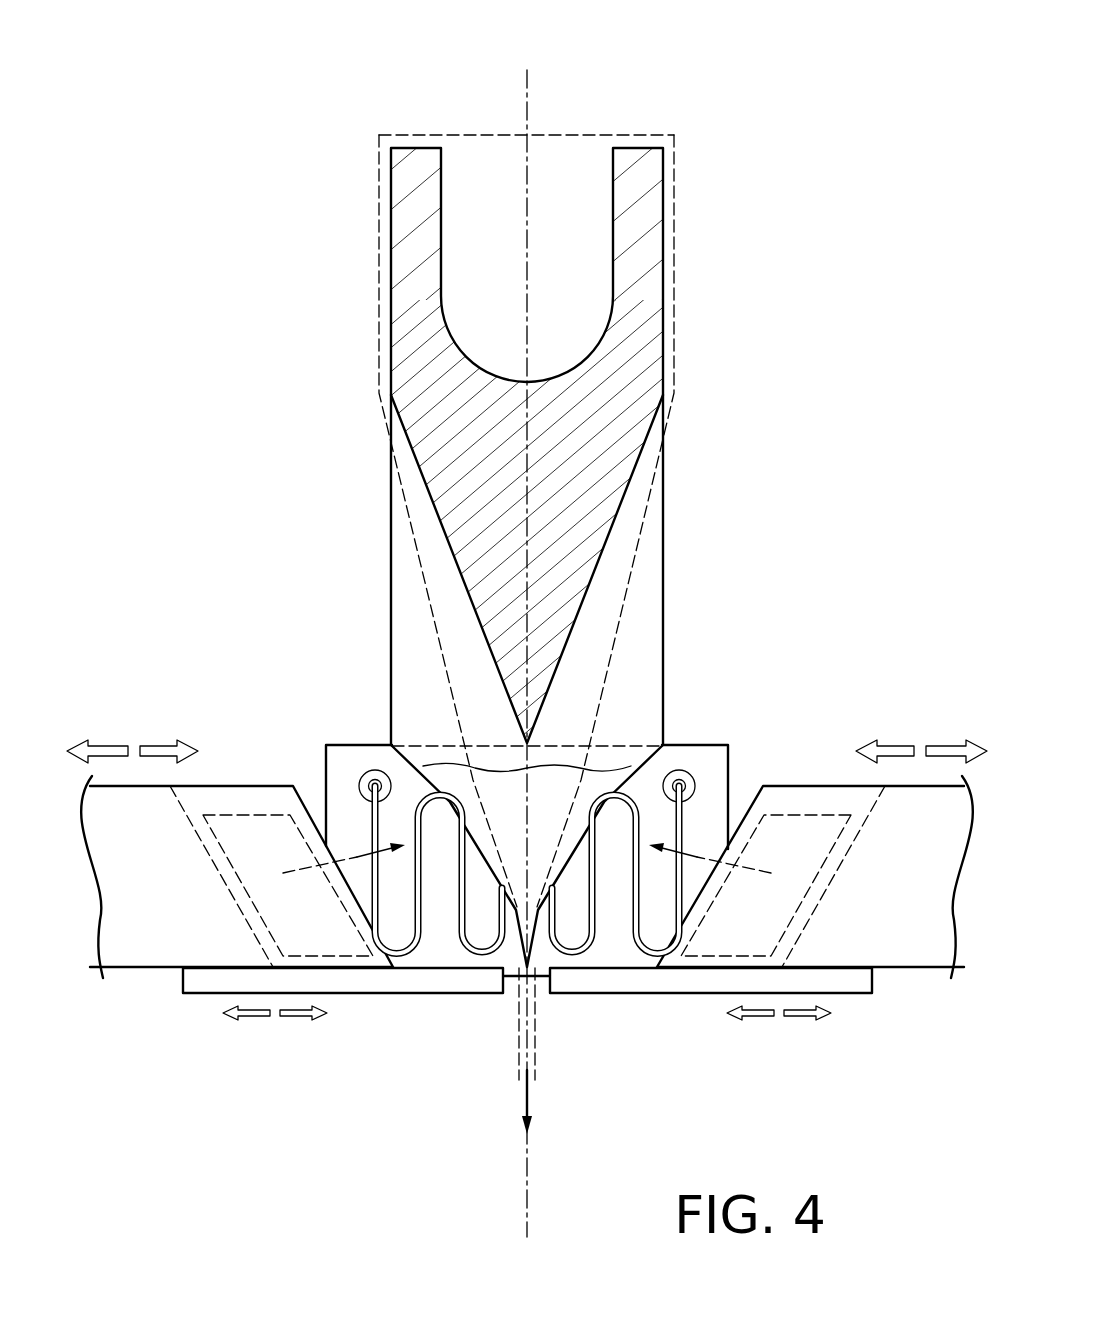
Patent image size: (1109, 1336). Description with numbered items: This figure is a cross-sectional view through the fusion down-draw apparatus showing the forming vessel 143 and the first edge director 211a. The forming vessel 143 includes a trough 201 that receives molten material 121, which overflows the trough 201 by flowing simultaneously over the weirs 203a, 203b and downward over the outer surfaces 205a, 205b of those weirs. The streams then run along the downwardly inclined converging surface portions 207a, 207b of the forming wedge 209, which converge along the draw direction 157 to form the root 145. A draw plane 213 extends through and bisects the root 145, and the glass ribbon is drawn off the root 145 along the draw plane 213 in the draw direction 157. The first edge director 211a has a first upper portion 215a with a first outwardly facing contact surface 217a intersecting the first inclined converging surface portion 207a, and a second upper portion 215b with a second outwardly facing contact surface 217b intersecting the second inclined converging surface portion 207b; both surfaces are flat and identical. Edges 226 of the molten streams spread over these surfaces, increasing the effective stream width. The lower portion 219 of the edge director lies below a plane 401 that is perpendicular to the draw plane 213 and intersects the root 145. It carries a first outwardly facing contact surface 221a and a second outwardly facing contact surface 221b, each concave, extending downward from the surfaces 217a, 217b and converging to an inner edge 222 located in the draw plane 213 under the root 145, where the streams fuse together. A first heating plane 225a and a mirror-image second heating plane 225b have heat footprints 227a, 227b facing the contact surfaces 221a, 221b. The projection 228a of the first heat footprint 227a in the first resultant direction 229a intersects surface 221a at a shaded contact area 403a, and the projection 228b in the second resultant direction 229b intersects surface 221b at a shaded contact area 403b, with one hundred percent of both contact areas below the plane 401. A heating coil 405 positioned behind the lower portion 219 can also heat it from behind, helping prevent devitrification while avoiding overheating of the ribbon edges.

The forming vessel 143 is at (562, 120).
The molten material 121 is at (482, 195).
The trough 201 is at (613, 296).
The weir 203a is at (414, 148).
The weir 203b is at (640, 148).
The outer surface of weir 205a is at (391, 215).
The outer surface of weir 205b is at (663, 215).
The first inclined converging surface portion 207a is at (465, 593).
The second inclined converging surface portion 207b is at (590, 593).
The forming wedge 209 is at (612, 476).
The first edge director 211a is at (350, 483).
The draw plane 213 is at (530, 243).
The first upper portion 215a is at (402, 544).
The second upper portion 215b is at (655, 544).
The first outwardly facing contact surface 217a is at (423, 642).
The second outwardly facing contact surface 217b is at (630, 642).
The lower portion 219 is at (650, 805).
The first outwardly facing contact surface of lower portion 221a is at (466, 798).
The second outwardly facing contact surface of lower portion 221b is at (588, 798).
The inner edge 222 is at (437, 765).
The first heating plane 225a is at (258, 786).
The second heating plane 225b is at (798, 786).
The edges of the streams of molten material 226 is at (450, 684).
The first heat footprint 227a is at (233, 882).
The second heat footprint 227b is at (821, 882).
The projection of first heat footprint 228a is at (485, 922).
The projection of second heat footprint 228b is at (569, 922).
The first resultant direction 229a is at (358, 860).
The second resultant direction 229b is at (696, 860).
The plane 401 is at (418, 744).
The shaded contact area 403a is at (490, 835).
The shaded contact area 403b is at (564, 835).
The heating coil 405 is at (687, 840).
The root 145 is at (530, 745).
The draw direction 157 is at (530, 1098).